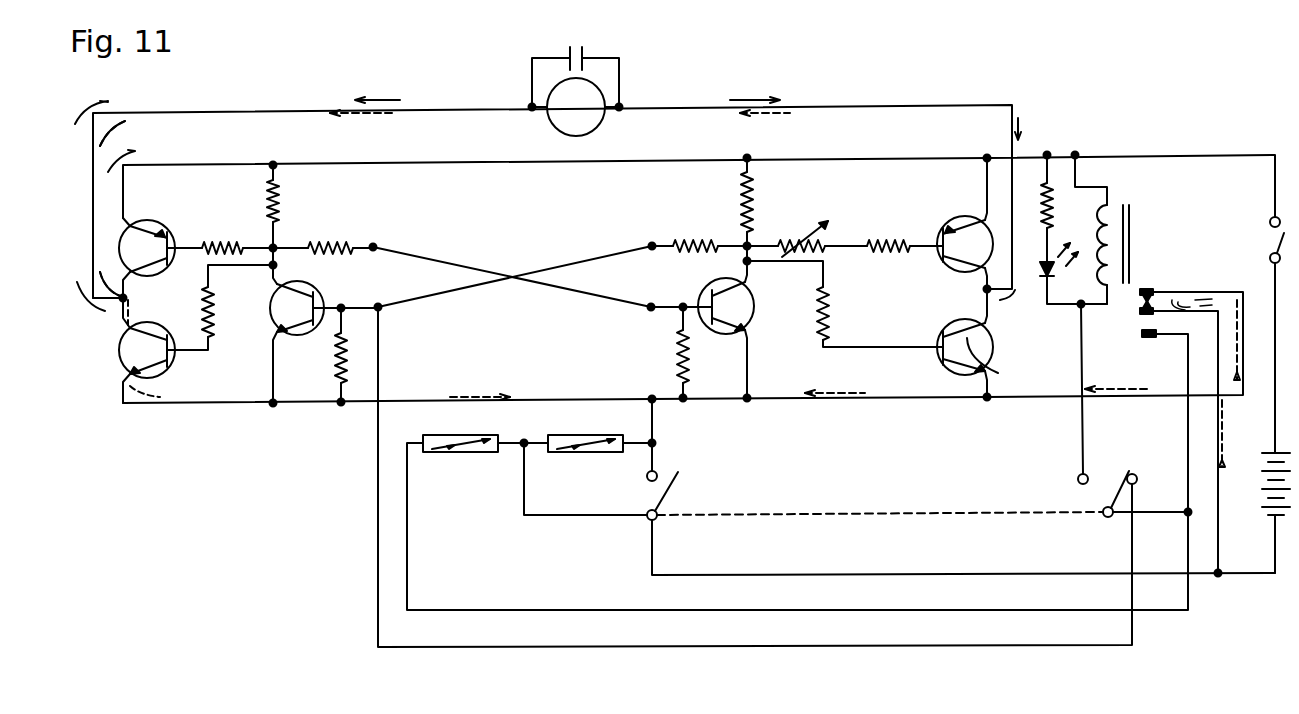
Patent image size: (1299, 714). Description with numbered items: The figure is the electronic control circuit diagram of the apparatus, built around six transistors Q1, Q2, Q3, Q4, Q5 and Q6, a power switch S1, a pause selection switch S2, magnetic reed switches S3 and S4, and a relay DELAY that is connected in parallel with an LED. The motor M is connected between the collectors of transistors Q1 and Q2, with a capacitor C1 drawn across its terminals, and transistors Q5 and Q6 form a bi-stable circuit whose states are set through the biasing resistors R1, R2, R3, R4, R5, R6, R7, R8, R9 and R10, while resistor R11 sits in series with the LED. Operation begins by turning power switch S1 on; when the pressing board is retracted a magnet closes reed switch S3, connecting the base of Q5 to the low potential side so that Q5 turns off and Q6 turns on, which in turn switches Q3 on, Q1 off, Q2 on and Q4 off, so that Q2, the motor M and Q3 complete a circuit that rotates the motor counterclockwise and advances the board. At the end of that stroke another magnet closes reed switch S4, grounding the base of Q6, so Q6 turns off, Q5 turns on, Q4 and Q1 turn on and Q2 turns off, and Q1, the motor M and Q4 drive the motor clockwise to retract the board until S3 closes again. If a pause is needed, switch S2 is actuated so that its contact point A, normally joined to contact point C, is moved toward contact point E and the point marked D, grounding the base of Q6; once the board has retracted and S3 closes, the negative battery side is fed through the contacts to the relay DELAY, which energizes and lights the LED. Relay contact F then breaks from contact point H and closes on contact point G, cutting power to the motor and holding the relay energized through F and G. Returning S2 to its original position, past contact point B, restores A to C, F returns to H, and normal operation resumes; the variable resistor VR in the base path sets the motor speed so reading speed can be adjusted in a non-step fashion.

The motor M is at (580, 107).
The capacitor C1 is at (575, 70).
The resistor R1 is at (288, 207).
The resistor R2 is at (762, 210).
The resistor R3 is at (220, 234).
The resistor R4 is at (905, 232).
The resistor R5 is at (325, 234).
The resistor R6 is at (699, 232).
The resistor R7 is at (222, 306).
The resistor R8 is at (845, 304).
The resistor R9 is at (322, 355).
The resistor R10 is at (705, 353).
The resistor R11 is at (1068, 207).
The variable resistor VR is at (807, 235).
The transistor Q1 is at (149, 249).
The transistor Q2 is at (965, 224).
The transistor Q3 is at (147, 350).
The transistor Q4 is at (967, 345).
The transistor Q5 is at (307, 327).
The transistor Q6 is at (720, 331).
The element LED is at (1073, 275).
The relay DELAY is at (1137, 228).
The relay contact point H is at (1136, 293).
The relay contact F is at (1169, 436).
The relay contact point G is at (797, 468).
The power switch S1 is at (1263, 335).
The pause selection switch S2 is at (1124, 422).
The magnetic reed switch S3 is at (485, 459).
The magnetic reed switch S4 is at (600, 458).
The contact point E is at (642, 478).
The terminal D is at (662, 509).
The contact point C is at (1072, 397).
The contact point A is at (1138, 501).
The terminal B is at (1130, 489).